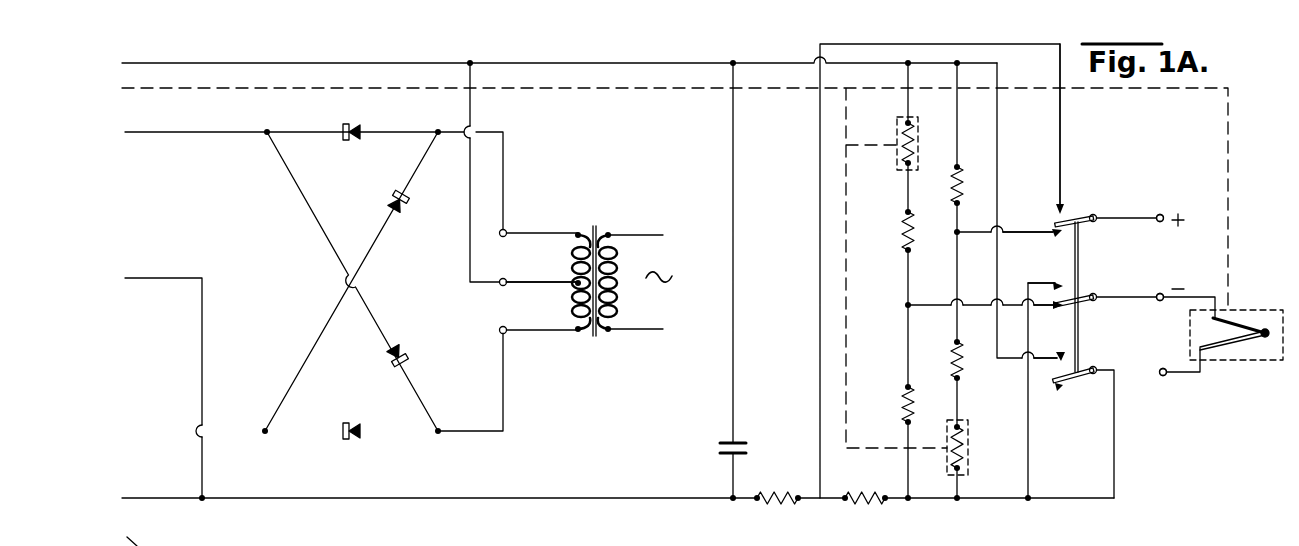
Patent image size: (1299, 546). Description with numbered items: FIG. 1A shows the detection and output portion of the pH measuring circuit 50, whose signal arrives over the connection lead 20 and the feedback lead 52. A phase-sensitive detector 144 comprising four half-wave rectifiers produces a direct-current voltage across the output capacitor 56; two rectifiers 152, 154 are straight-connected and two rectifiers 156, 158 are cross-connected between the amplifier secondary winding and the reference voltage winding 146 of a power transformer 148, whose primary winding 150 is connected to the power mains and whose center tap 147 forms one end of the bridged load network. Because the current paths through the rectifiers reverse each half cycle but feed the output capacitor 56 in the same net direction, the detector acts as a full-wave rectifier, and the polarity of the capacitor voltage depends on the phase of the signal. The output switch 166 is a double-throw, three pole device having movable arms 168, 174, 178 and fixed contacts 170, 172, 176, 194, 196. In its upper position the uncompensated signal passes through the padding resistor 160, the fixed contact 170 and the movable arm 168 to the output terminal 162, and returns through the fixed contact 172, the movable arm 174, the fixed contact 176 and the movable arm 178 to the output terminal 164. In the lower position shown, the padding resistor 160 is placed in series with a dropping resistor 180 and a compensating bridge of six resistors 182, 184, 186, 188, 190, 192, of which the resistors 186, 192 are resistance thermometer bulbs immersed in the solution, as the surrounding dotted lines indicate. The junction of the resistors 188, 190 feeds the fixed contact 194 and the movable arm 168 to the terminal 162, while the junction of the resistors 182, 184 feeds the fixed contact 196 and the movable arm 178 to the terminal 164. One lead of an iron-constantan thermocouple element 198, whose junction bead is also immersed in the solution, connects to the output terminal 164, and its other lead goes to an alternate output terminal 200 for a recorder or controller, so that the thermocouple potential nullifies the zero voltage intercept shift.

The connection lead 20 is at (163, 62).
The feedback lead 52 is at (170, 499).
The control circuit 50 is at (568, 543).
The phase-sensitive detector 144 is at (302, 249).
The straight-connected rectifier 152 is at (347, 123).
The rectifier 154 is at (349, 441).
The rectifier 156 is at (406, 204).
The cross-connected rectifier 158 is at (407, 351).
The power transformer 148 is at (595, 230).
The reference voltage winding 146 is at (575, 265).
The center tap 147 is at (576, 285).
The primary winding 150 is at (616, 302).
The output capacitor 56 is at (722, 446).
The padding resistor 160 is at (778, 506).
The dropping resistor 180 is at (876, 506).
The bridge resistor 182 is at (904, 397).
The bridge resistor 184 is at (902, 238).
The temperature sensitive resistor 186 is at (906, 140).
The bridge resistor 188 is at (960, 177).
The bridge resistor 190 is at (961, 373).
The temperature sensitive resistor 192 is at (968, 455).
The output switch 166 is at (1091, 190).
The fixed contact 170 is at (1059, 206).
The fixed contact 194 is at (1054, 236).
The fixed contact 176 is at (1058, 284).
The fixed contact 196 is at (1062, 308).
The fixed contact 172 is at (1062, 342).
The movable arm 168 is at (1083, 226).
The movable arm 178 is at (1085, 306).
The movable arm 174 is at (1070, 389).
The output terminal 162 is at (1160, 214).
The output terminal 164 is at (1160, 293).
The thermocouple element 198 is at (1265, 340).
The alternate output terminal 200 is at (1162, 376).